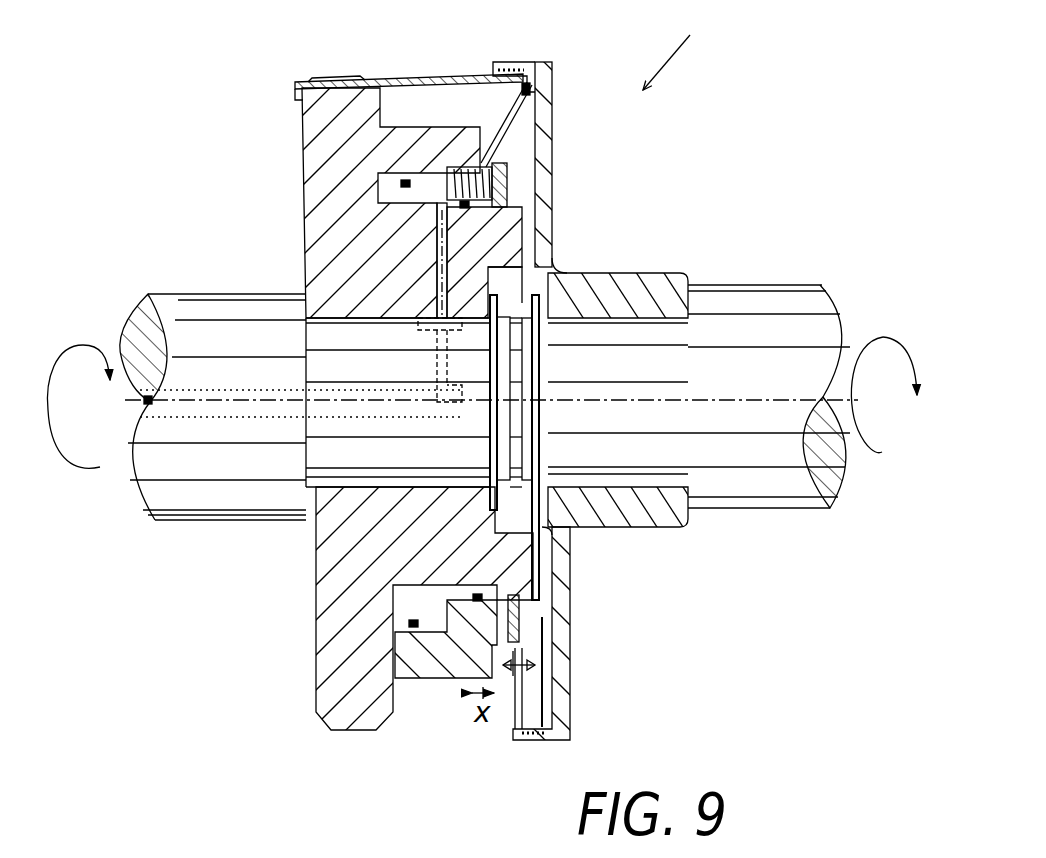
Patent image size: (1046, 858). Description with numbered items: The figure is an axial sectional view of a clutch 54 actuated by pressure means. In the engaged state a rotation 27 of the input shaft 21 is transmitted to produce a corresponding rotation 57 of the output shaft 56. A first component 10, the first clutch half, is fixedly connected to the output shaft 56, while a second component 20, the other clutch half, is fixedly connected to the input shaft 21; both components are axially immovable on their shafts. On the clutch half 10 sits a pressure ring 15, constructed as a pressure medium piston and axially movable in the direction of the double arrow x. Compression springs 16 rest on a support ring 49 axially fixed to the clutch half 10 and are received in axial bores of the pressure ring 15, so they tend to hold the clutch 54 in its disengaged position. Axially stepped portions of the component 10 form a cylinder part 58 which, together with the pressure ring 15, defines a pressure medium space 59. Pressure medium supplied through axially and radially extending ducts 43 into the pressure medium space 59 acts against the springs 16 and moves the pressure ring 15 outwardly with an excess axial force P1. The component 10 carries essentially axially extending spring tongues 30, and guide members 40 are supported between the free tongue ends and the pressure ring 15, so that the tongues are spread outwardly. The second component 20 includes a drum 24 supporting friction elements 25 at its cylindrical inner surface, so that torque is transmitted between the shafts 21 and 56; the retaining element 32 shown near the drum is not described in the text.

The first component 10 is at (300, 158).
The pressure ring 15 is at (437, 668).
The compression springs 16 is at (455, 172).
The second component 20 is at (555, 219).
The input shaft 21 is at (746, 318).
The drum 24 is at (520, 62).
The friction elements 25 is at (530, 73).
The rotation 27 is at (890, 337).
The spring tongues 30 is at (410, 78).
The retaining element 32 is at (532, 94).
The guide members 40 is at (497, 112).
The ducts 43 is at (440, 250).
The support ring 49 is at (505, 183).
The clutch 54 is at (672, 47).
The output shaft 56 is at (233, 343).
The rotation 57 is at (75, 345).
The cylinder part 58 is at (447, 580).
The pressure medium space 59 is at (445, 615).
The axial force P1 is at (517, 676).